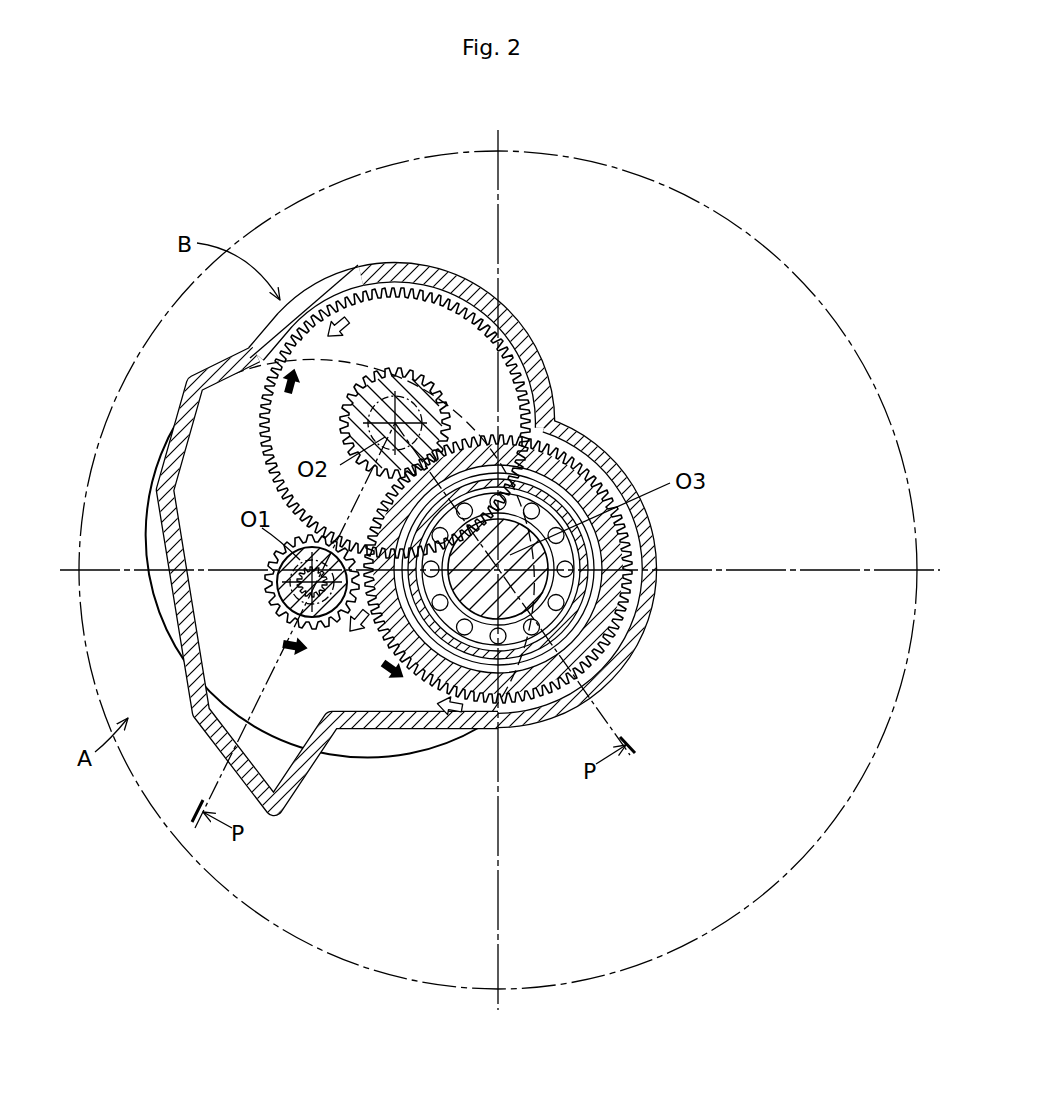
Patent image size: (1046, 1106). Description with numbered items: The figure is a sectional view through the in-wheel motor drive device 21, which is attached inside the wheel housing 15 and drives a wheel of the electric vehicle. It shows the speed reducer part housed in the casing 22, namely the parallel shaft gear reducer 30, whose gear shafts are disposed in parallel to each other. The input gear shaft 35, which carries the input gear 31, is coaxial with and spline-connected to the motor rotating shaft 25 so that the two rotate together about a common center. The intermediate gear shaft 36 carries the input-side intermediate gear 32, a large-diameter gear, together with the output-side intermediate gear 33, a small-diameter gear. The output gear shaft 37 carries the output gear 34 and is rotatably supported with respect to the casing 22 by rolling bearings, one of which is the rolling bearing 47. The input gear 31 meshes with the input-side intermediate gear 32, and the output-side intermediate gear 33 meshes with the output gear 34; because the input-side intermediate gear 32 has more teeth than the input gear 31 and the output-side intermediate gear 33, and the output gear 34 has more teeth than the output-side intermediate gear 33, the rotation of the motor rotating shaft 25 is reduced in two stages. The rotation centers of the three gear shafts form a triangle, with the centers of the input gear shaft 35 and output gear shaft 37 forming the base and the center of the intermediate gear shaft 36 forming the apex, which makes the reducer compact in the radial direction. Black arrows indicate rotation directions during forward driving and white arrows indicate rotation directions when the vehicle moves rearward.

The wheel housing 15 is at (757, 232).
The in-wheel motor drive device 21 is at (542, 275).
The casing 22 is at (540, 347).
The motor rotating shaft 25 is at (322, 605).
The parallel shaft gear reducer 30 is at (240, 430).
The input gear 31 is at (278, 612).
The input-side intermediate gear 32 is at (382, 300).
The output-side intermediate gear 33 is at (400, 372).
The output gear 34 is at (575, 450).
The input gear shaft 35 is at (290, 585).
The intermediate gear shaft 36 is at (345, 423).
The output gear shaft 37 is at (600, 578).
The rolling bearing 47 is at (590, 605).